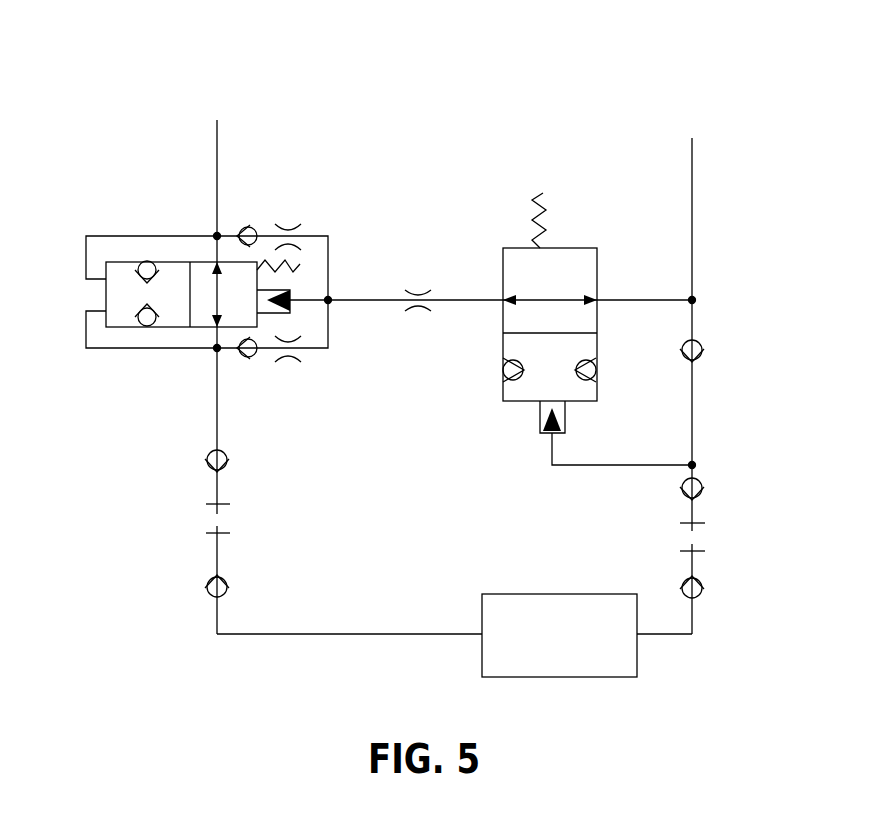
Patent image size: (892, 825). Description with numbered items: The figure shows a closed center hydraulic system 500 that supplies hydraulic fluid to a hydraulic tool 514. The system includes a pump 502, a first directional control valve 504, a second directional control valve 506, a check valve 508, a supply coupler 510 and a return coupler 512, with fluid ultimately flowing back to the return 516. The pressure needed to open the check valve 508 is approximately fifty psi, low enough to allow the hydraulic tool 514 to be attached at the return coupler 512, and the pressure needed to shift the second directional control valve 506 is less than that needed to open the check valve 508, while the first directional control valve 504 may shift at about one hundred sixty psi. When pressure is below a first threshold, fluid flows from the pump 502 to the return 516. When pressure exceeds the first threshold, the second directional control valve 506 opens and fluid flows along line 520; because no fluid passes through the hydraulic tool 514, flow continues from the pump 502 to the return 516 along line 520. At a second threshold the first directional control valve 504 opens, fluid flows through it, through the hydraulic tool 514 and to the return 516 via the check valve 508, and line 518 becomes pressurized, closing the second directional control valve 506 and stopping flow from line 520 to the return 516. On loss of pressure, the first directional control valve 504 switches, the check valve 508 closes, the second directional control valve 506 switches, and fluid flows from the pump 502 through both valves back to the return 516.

The closed center hydraulic system 500 is at (602, 33).
The pump 502 is at (241, 92).
The first directional control valve 504 is at (133, 190).
The second directional control valve 506 is at (581, 212).
The check valve 508 is at (725, 343).
The supply coupler 510 is at (180, 517).
The return coupler 512 is at (723, 536).
The hydraulic tool 514 is at (482, 657).
The return 516 is at (707, 102).
The line 518 is at (567, 467).
The line 520 is at (370, 298).